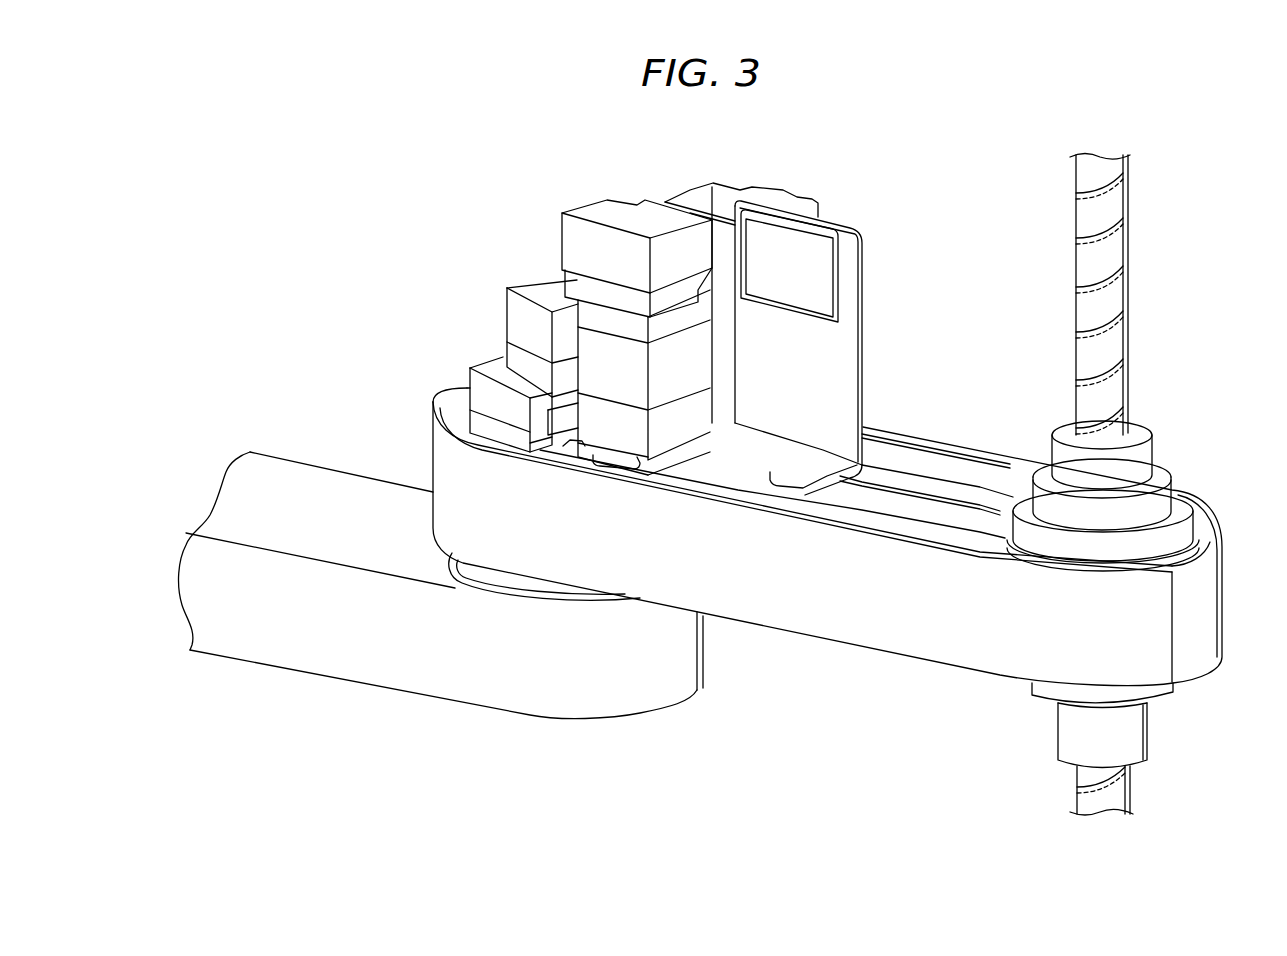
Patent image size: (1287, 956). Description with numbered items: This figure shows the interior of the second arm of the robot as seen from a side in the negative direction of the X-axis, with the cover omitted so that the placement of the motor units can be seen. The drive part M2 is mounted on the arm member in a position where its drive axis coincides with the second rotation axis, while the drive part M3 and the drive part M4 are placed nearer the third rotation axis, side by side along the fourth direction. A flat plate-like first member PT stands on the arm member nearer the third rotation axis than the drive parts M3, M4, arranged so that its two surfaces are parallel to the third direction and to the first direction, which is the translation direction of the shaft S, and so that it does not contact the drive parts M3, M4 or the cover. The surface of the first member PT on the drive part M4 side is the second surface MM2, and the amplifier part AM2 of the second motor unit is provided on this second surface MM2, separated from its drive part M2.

The shaft S is at (1115, 255).
The drive part M2 is at (518, 312).
The drive part M3 is at (778, 192).
The drive part M4 is at (575, 243).
The first member PT is at (850, 228).
The amplifier part AM2 is at (825, 273).
The second surface MM2 is at (828, 392).